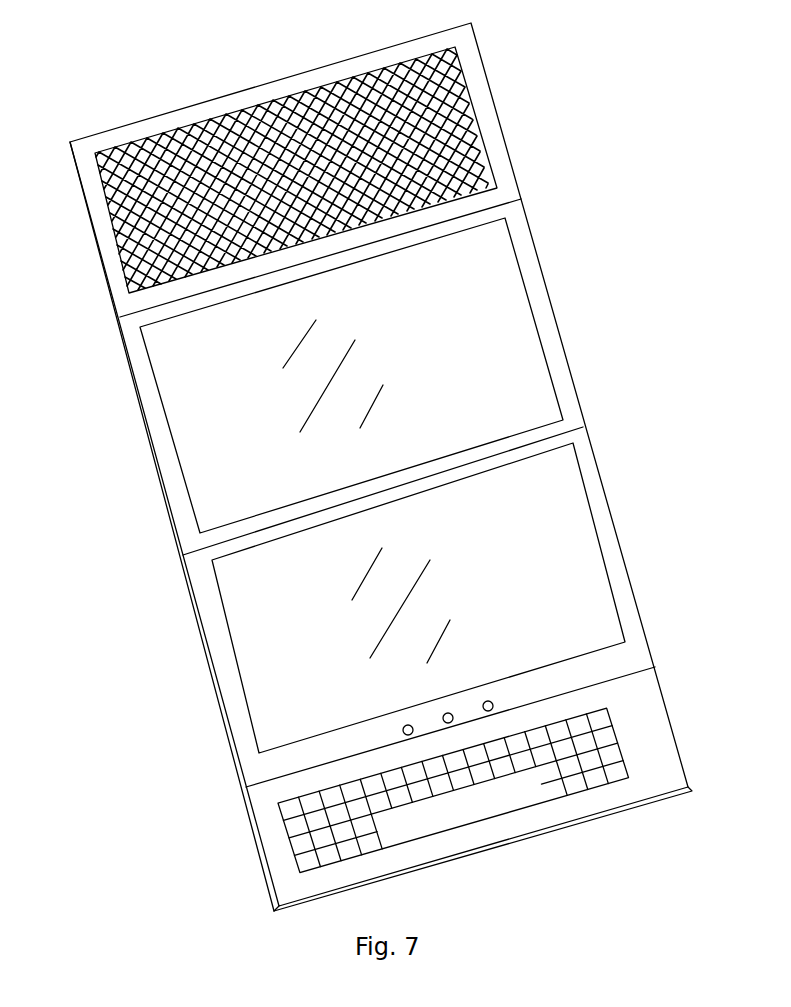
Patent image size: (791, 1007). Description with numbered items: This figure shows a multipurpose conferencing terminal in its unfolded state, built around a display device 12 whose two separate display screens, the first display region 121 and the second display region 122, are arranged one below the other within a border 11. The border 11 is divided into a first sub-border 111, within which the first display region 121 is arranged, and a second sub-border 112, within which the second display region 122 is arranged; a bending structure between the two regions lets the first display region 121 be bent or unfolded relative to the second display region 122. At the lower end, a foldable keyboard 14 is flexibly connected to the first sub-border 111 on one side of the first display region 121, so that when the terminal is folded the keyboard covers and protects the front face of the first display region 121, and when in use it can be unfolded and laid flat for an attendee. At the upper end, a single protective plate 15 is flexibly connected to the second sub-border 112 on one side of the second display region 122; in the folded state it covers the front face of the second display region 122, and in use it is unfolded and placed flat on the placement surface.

The border 11 is at (392, 467).
The first sub-border 111 is at (585, 473).
The second sub-border 112 is at (556, 352).
The display device 12 is at (334, 485).
The first display region 121 is at (270, 592).
The second display region 122 is at (217, 458).
The foldable keyboard 14 is at (658, 743).
The protective plate 15 is at (470, 140).